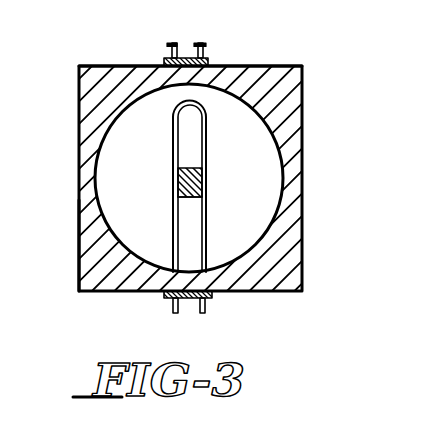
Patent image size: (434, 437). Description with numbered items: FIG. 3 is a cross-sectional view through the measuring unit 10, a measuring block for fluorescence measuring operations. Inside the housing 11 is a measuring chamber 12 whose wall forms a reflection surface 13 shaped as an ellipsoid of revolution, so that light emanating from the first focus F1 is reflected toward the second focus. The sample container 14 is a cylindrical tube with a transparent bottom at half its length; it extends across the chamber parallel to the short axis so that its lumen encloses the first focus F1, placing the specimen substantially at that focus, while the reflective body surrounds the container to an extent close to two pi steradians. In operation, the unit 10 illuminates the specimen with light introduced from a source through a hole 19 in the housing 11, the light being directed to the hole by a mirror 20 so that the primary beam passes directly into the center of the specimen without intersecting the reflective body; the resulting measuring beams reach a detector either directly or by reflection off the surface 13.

The measuring unit 10 is at (111, 61).
The housing 11 is at (88, 117).
The measuring chamber 12 is at (86, 223).
The reflection surface 13 is at (99, 162).
The sample container 14 is at (203, 132).
The hole 19 is at (211, 34).
The mirror 20 is at (203, 178).
The first focus F1 is at (174, 199).